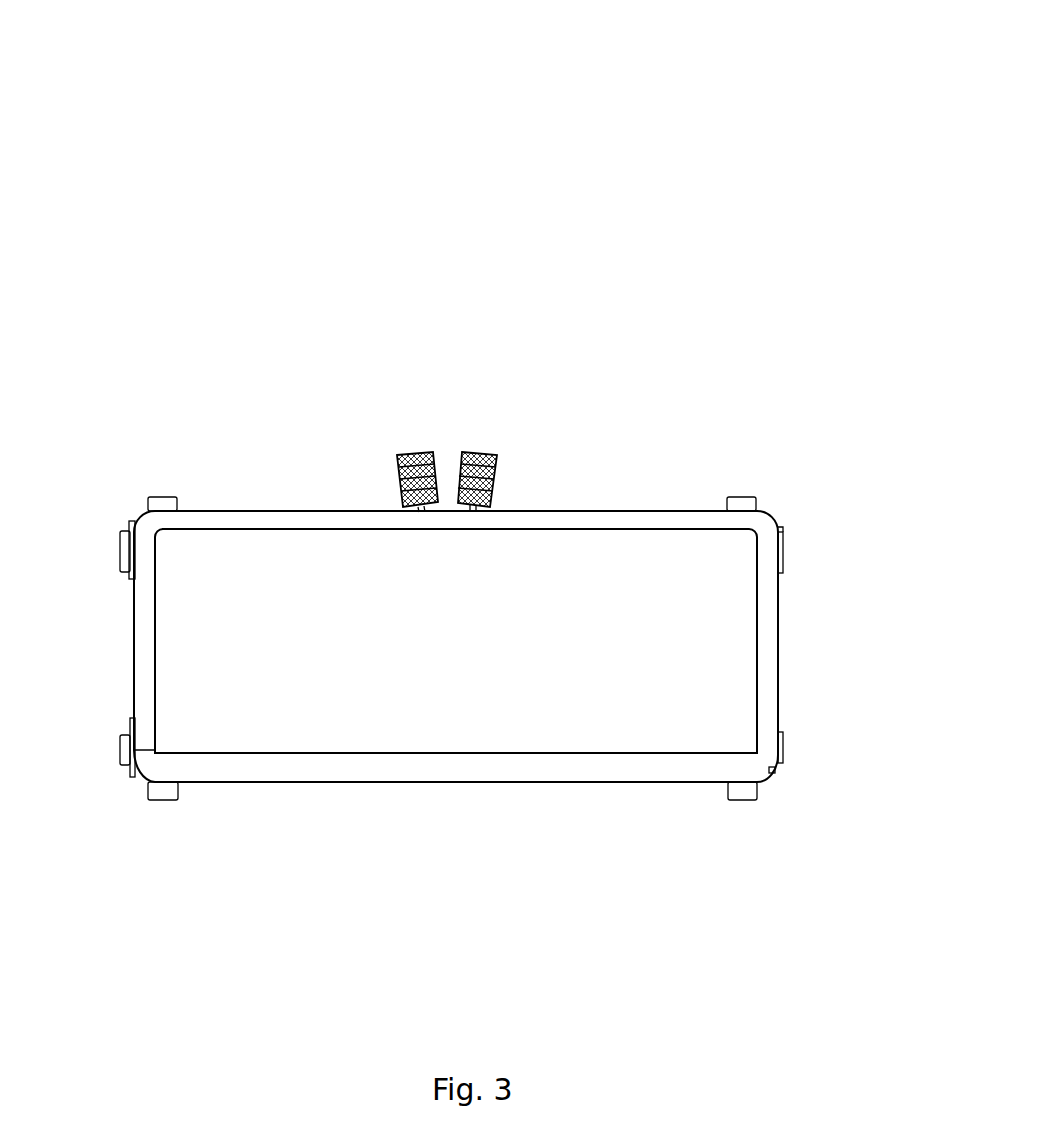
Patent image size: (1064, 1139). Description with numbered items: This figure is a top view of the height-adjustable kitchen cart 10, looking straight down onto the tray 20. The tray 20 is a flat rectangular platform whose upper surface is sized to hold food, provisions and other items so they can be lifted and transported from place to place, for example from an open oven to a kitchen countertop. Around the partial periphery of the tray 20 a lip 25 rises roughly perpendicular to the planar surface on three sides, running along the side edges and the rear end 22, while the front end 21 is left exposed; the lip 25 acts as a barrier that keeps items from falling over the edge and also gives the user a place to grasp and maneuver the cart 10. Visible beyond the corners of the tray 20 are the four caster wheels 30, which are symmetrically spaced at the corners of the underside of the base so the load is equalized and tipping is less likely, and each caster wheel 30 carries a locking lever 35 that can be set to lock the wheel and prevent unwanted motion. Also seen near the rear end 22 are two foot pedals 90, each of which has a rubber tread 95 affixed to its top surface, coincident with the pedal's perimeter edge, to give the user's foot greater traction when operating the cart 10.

The height-adjustable kitchen cart 10 is at (656, 136).
The tray 20 is at (200, 648).
The front end 21 is at (568, 794).
The rear end 22 is at (613, 504).
The lip 25 is at (147, 605).
The caster wheel 30 is at (742, 501).
The locking lever 35 is at (125, 538).
The foot pedal 90 is at (442, 450).
The rubber tread 95 is at (403, 479).